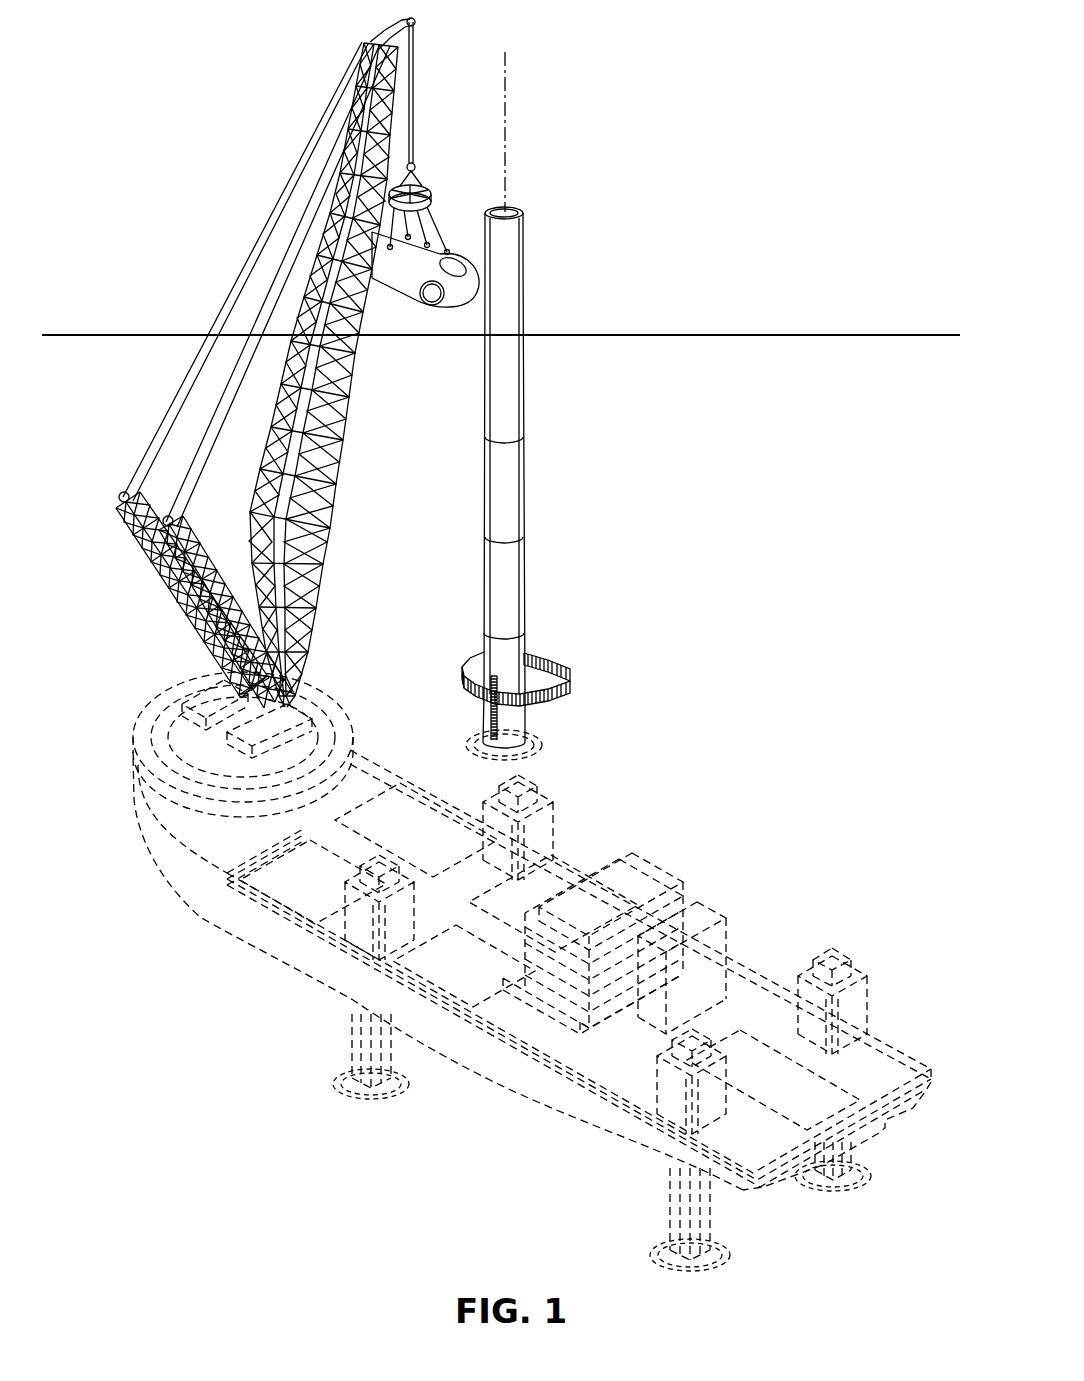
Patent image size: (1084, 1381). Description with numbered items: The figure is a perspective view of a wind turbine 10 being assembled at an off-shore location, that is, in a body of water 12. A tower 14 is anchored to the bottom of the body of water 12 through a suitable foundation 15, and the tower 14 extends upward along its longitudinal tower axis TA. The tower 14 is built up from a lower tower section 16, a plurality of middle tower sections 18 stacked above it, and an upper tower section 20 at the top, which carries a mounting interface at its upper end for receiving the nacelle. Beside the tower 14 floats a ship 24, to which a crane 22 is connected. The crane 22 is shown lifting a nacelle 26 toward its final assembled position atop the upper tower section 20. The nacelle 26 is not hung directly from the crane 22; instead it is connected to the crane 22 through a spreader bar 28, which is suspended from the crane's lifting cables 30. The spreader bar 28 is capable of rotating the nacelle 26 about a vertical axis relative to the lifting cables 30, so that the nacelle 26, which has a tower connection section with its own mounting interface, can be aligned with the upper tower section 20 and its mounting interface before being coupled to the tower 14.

The wind turbine 10 is at (594, 261).
The body of water 12 is at (805, 629).
The tower 14 is at (538, 506).
The foundation 15 is at (526, 713).
The lower tower section 16 is at (479, 647).
The middle tower sections 18 is at (526, 378).
The upper tower section 20 is at (525, 291).
The crane 22 is at (336, 537).
The ship 24 is at (647, 861).
The nacelle 26 is at (444, 248).
The spreader bar 28 is at (431, 196).
The lifting cables 30 is at (413, 116).
The tower axis TA is at (508, 113).